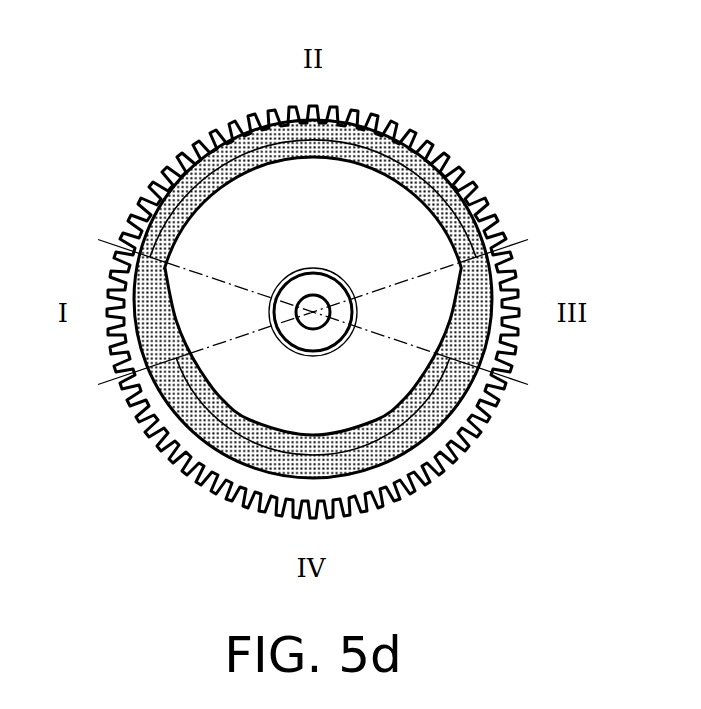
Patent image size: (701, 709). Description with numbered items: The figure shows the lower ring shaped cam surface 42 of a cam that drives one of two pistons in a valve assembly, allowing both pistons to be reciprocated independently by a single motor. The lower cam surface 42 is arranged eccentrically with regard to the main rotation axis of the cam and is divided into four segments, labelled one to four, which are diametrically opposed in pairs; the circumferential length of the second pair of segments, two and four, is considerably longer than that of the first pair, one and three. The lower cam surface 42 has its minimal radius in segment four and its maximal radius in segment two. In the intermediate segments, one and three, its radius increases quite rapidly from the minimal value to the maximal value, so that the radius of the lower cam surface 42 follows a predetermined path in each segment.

The lower ring shaped cam surface 42 is at (457, 404).